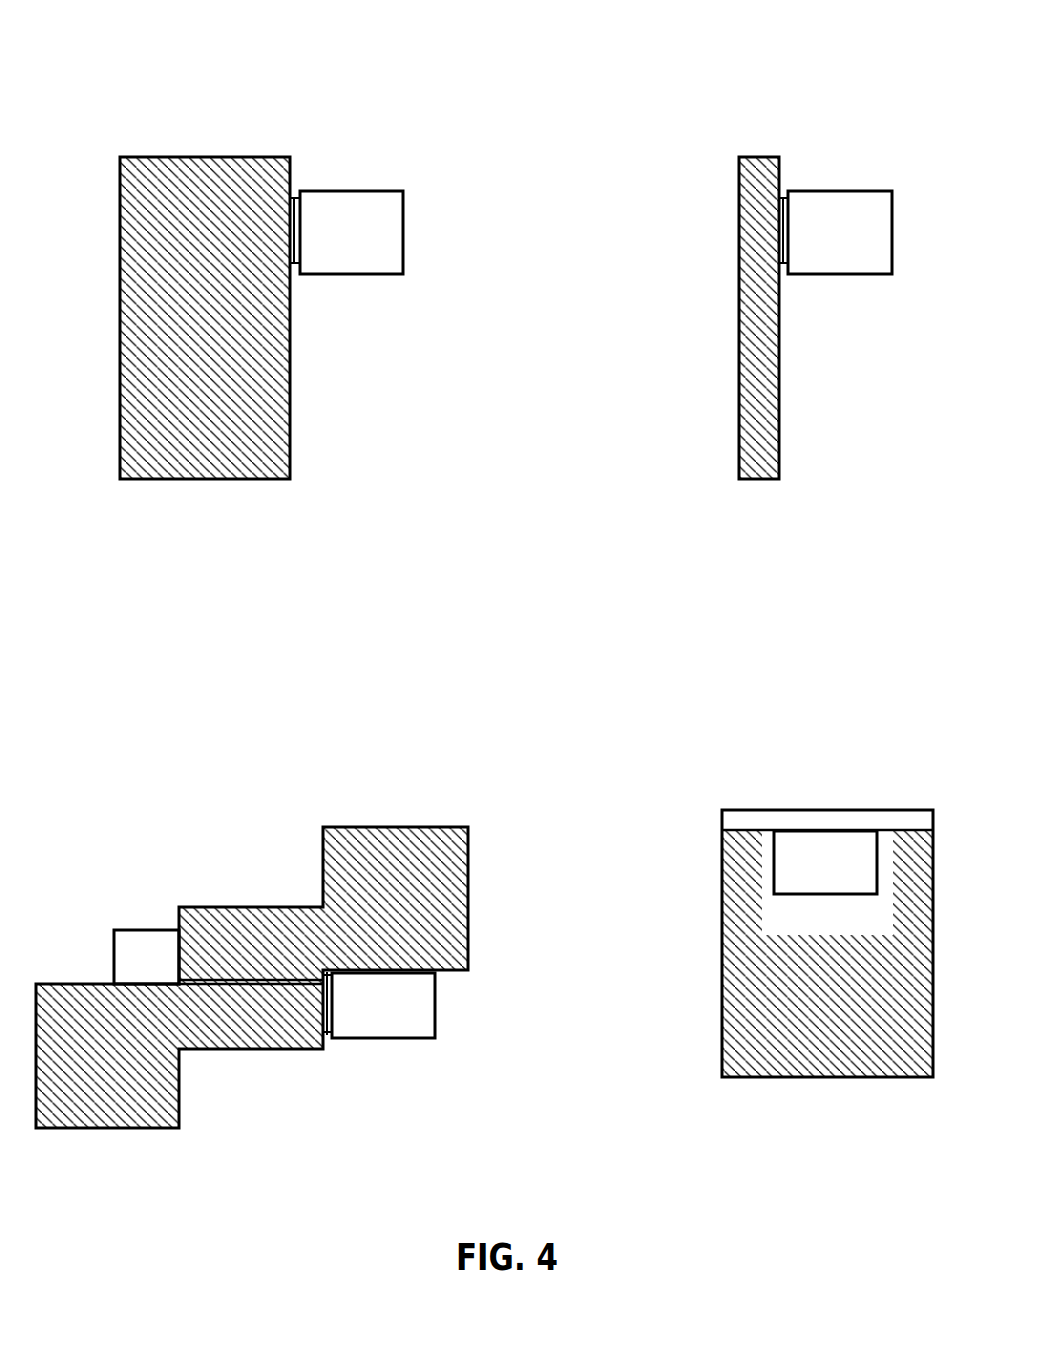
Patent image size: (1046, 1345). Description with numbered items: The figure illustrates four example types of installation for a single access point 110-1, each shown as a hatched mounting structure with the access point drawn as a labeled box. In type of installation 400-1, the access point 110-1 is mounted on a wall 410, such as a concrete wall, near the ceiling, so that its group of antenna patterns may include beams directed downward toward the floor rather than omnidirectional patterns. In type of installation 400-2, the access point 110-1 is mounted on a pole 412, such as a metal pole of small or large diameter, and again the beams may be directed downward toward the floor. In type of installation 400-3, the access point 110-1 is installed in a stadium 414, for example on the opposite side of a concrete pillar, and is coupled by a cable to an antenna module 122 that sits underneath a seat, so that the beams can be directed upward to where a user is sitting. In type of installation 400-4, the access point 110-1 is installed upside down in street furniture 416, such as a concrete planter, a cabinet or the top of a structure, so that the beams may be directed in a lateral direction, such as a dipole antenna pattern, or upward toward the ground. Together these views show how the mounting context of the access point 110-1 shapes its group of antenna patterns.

The type of installation 400-1 is at (227, 88).
The type of installation 400-2 is at (715, 88).
The type of installation 400-3 is at (227, 744).
The type of installation 400-4 is at (713, 742).
The wall 410 is at (173, 263).
The pole 412 is at (760, 260).
The stadium 414 is at (138, 1089).
The street furniture 416 is at (758, 1032).
The access point 110-1 is at (851, 887).
The antenna module 122 is at (163, 978).